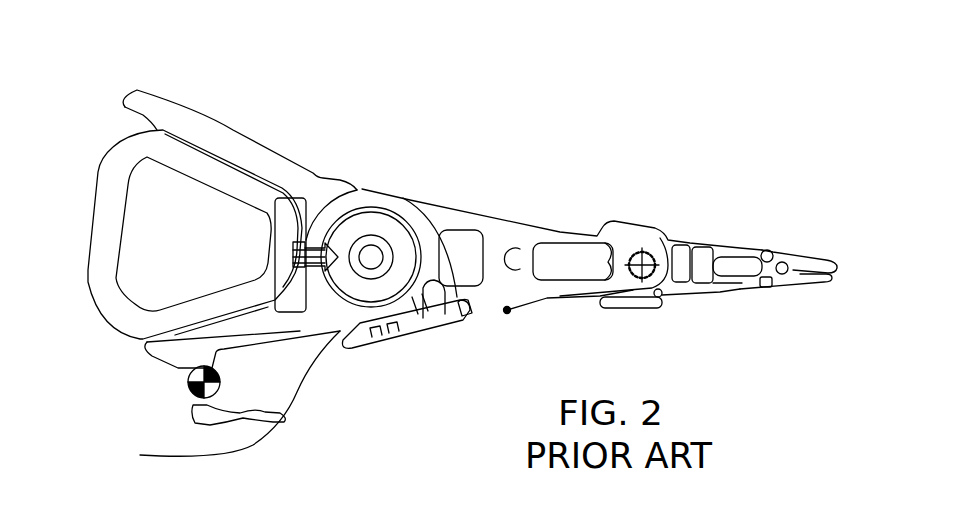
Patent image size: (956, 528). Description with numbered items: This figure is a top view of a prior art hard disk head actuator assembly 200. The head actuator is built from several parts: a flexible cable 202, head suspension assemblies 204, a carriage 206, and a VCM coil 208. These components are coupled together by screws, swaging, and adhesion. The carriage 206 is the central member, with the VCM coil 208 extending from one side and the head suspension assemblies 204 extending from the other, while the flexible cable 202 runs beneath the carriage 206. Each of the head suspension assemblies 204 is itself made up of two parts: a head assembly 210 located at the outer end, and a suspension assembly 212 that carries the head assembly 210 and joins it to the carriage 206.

The hard disk head actuator assembly 200 is at (535, 117).
The flexible cable 202 is at (298, 404).
The head suspension assemblies 204 is at (702, 230).
The carriage 206 is at (400, 199).
The VCM coil 208 is at (99, 168).
The head assembly 210 is at (837, 267).
The suspension assembly 212 is at (767, 250).